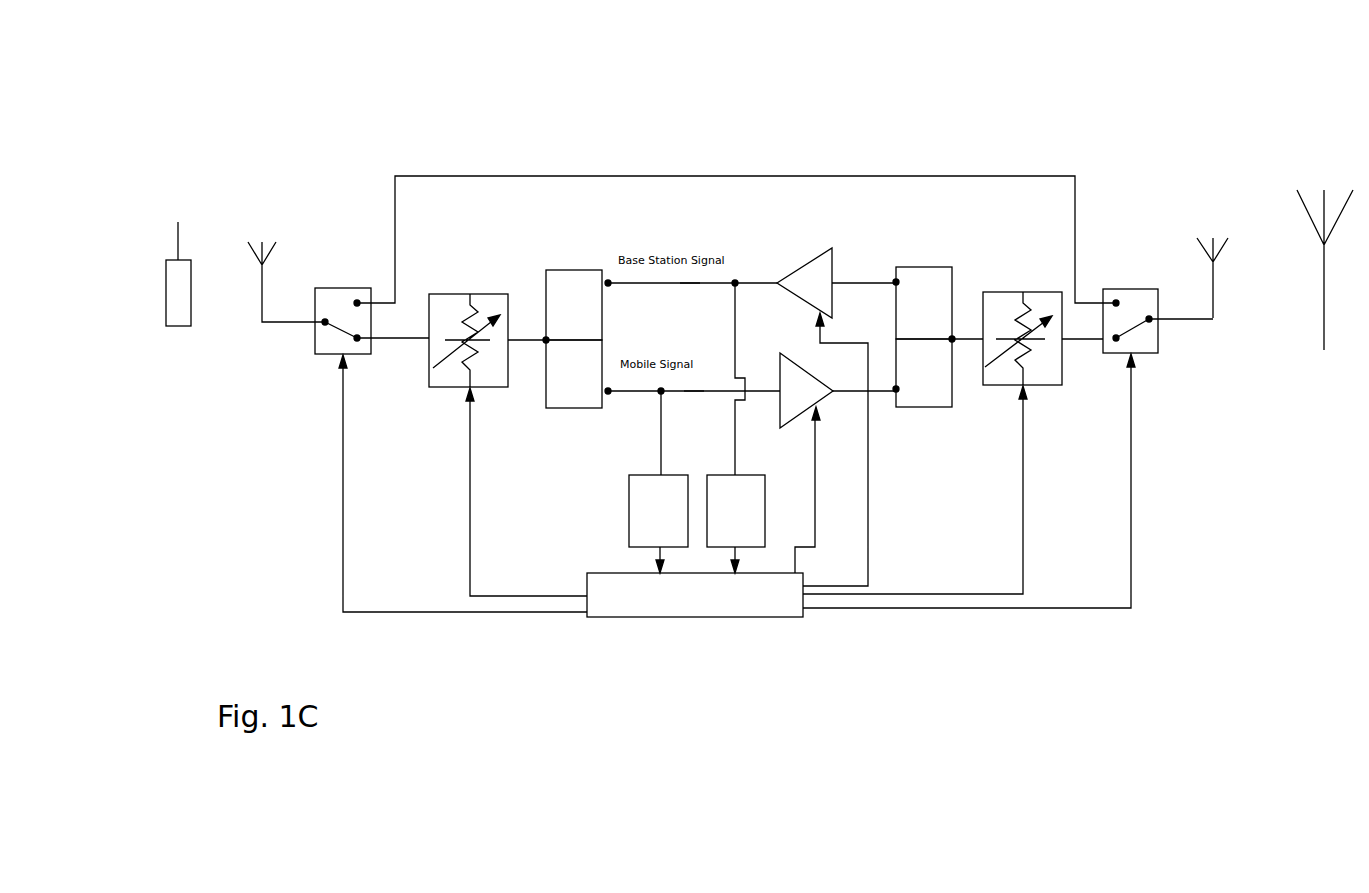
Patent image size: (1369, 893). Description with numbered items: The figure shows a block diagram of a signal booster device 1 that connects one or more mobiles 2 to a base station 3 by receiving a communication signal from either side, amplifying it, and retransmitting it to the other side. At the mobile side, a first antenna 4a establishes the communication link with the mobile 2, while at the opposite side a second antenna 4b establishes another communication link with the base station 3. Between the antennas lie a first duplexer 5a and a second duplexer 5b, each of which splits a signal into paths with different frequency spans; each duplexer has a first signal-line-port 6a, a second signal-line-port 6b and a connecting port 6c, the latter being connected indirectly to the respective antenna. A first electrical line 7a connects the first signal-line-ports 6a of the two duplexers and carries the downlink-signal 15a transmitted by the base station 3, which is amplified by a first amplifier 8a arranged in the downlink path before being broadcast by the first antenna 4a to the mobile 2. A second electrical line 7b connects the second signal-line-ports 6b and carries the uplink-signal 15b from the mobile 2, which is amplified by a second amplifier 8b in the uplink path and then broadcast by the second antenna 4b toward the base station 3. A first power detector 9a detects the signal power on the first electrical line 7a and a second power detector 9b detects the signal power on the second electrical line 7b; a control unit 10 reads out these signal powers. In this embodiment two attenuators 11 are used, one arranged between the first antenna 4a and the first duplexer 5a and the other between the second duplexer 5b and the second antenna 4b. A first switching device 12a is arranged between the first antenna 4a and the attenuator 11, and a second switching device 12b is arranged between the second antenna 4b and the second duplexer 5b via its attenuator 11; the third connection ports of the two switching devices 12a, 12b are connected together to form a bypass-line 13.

The signal booster device 1 is at (193, 124).
The mobile 2 is at (178, 326).
The base station 3 is at (1324, 350).
The first antenna 4a is at (264, 322).
The second antenna 4b is at (1213, 290).
The first duplexer 5a is at (575, 410).
The second duplexer 5b is at (940, 410).
The first signal-line-port 6a is at (609, 283).
The second signal-line-port 6b is at (610, 395).
The connecting port 6c is at (546, 338).
The first electrical line 7a is at (768, 283).
The second electrical line 7b is at (776, 391).
The first amplifier 8a is at (822, 248).
The second amplifier 8b is at (826, 400).
The first power detector 9a is at (762, 475).
The second power detector 9b is at (629, 535).
The control unit 10 is at (680, 620).
The attenuator 11 is at (455, 294).
The first switching device 12a is at (345, 288).
The second switching device 12b is at (1148, 355).
The bypass-line 13 is at (700, 176).
The downlink-signal 15a is at (688, 286).
The uplink-signal 15b is at (692, 394).